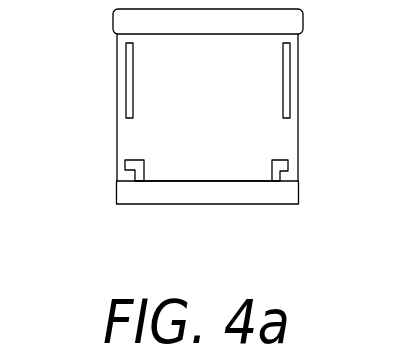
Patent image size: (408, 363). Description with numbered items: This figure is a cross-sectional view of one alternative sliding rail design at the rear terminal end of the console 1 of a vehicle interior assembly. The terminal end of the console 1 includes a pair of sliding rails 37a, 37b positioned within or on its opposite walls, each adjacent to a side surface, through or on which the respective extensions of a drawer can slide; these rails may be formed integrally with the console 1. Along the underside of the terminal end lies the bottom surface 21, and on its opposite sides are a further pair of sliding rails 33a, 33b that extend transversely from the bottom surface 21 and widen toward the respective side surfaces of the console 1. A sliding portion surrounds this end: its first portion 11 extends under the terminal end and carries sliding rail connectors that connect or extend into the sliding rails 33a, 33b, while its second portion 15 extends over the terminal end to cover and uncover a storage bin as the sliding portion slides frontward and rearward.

The console 1 is at (153, 142).
The second portion 15 is at (114, 24).
The first portion 11 is at (127, 192).
The bottom surface 21 is at (174, 181).
The sliding rail 37a is at (290, 73).
The sliding rail 37b is at (127, 88).
The sliding rail 33a is at (288, 163).
The sliding rail 33b is at (125, 163).